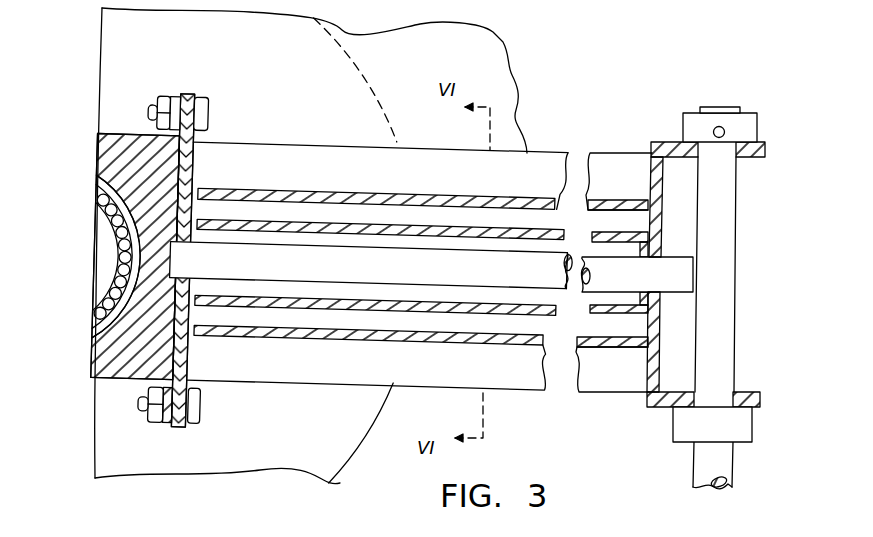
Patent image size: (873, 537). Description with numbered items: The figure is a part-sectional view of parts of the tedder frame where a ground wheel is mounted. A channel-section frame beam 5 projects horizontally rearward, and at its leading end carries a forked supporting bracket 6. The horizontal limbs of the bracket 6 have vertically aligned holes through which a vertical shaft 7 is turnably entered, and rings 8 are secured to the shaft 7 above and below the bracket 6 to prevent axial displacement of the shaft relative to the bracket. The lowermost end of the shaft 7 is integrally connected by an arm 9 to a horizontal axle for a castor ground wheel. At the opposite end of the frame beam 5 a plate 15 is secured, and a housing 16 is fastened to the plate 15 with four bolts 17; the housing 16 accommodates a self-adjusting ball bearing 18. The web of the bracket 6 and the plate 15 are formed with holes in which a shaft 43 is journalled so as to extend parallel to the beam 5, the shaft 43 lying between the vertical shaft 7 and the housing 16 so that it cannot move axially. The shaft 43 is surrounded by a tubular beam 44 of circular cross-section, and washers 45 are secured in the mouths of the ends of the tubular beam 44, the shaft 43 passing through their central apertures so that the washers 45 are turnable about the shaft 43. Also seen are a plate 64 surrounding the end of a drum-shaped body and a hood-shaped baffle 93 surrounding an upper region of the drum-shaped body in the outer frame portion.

The frame beam 5 is at (455, 386).
The forked supporting bracket 6 is at (648, 402).
The vertical shaft 7 is at (737, 199).
The ring 8 is at (683, 122).
The arm 9 is at (733, 470).
The plate 15 is at (178, 430).
The housing 16 is at (116, 137).
The bolt 17 is at (203, 417).
The self-adjusting ball bearing 18 is at (107, 334).
The shaft 43 is at (578, 303).
The tubular beam 44 is at (592, 230).
The washer 45 is at (200, 240).
The plate 64 is at (335, 477).
The hood-shaped baffle 93 is at (512, 70).